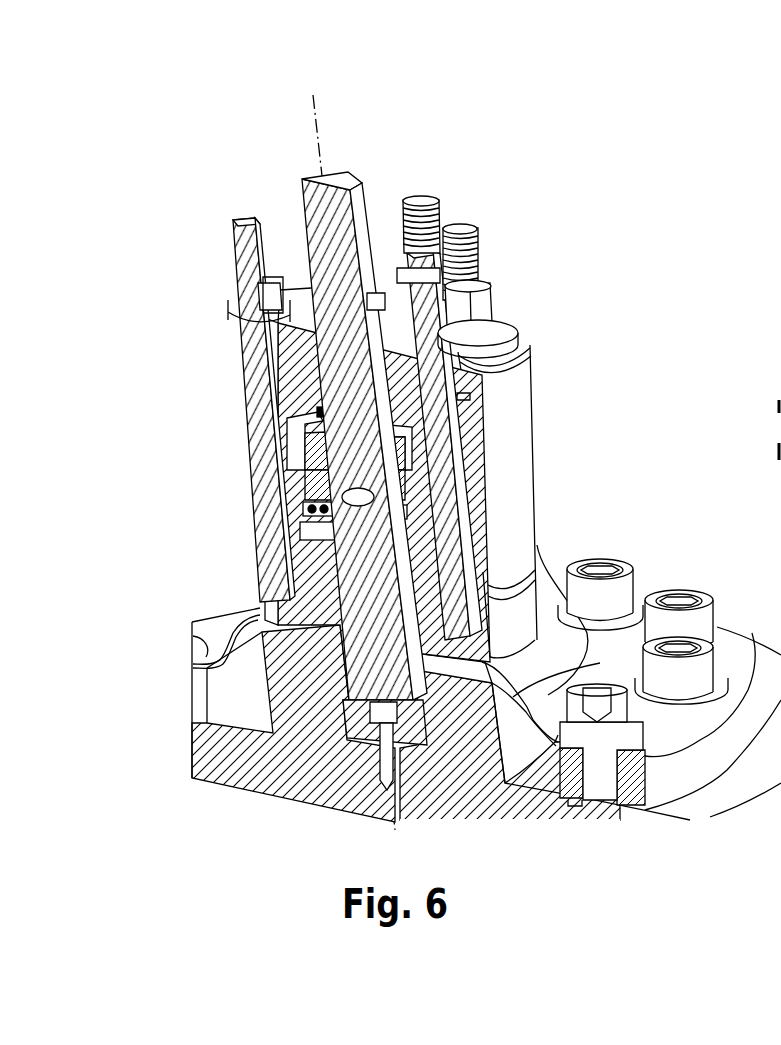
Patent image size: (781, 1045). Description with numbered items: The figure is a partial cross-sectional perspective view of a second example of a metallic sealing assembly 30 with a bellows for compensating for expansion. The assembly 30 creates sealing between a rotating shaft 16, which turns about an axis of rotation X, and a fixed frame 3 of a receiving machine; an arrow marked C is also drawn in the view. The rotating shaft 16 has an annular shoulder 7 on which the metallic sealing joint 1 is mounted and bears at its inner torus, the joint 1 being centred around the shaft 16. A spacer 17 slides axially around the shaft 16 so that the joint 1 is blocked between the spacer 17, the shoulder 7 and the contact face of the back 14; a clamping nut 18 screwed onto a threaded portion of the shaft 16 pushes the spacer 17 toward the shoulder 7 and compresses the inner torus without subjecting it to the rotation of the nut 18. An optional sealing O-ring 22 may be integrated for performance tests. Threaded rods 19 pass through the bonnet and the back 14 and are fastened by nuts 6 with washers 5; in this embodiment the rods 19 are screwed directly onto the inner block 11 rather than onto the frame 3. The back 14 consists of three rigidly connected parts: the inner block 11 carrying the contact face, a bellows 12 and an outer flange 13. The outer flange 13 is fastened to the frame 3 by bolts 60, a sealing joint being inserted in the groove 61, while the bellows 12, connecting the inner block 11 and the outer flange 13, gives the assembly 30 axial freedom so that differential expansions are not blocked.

The assembly 30 is at (228, 176).
The axis of rotation X is at (322, 142).
The rotating shaft 16 is at (360, 193).
The threaded rods 19 is at (240, 237).
The nuts 6 is at (232, 298).
The washers 5 is at (472, 330).
The sealing O-ring 22 is at (316, 410).
The clamping nut 18 is at (310, 456).
The spacer 17 is at (308, 492).
The metallic sealing joint 1 is at (303, 509).
The annular shoulder 7 is at (305, 527).
The direction C is at (180, 566).
The fixed frame 3 is at (215, 748).
The back 14 is at (660, 462).
The inner block 11 is at (527, 590).
The bellows 12 is at (548, 592).
The outer flange 13 is at (625, 655).
The bolts 60 is at (687, 590).
The groove 61 is at (573, 806).